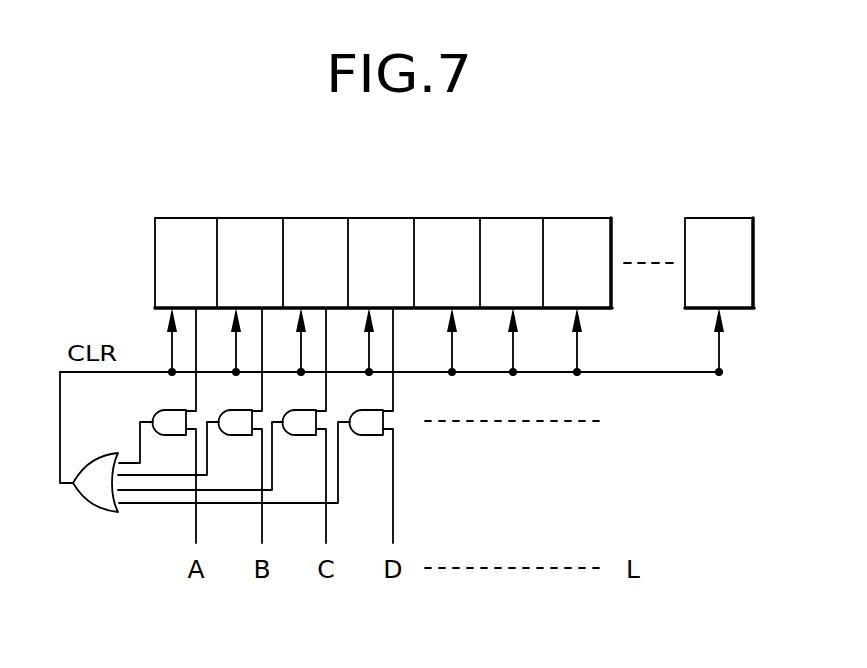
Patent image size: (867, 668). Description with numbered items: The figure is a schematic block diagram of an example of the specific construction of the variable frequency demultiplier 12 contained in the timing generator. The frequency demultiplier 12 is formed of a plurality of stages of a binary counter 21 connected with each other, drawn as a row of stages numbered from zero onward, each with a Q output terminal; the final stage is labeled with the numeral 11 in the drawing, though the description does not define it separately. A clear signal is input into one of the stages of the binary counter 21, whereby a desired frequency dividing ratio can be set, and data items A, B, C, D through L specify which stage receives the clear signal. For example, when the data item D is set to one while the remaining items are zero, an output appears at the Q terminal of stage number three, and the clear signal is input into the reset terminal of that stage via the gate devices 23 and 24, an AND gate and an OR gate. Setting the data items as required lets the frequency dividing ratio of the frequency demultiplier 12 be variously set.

The frequency demultiplier 12 is at (492, 204).
The binary counter 21 is at (177, 222).
The last register stage 11 is at (719, 263).
The gate device 23 is at (372, 434).
The gate device 24 is at (113, 513).